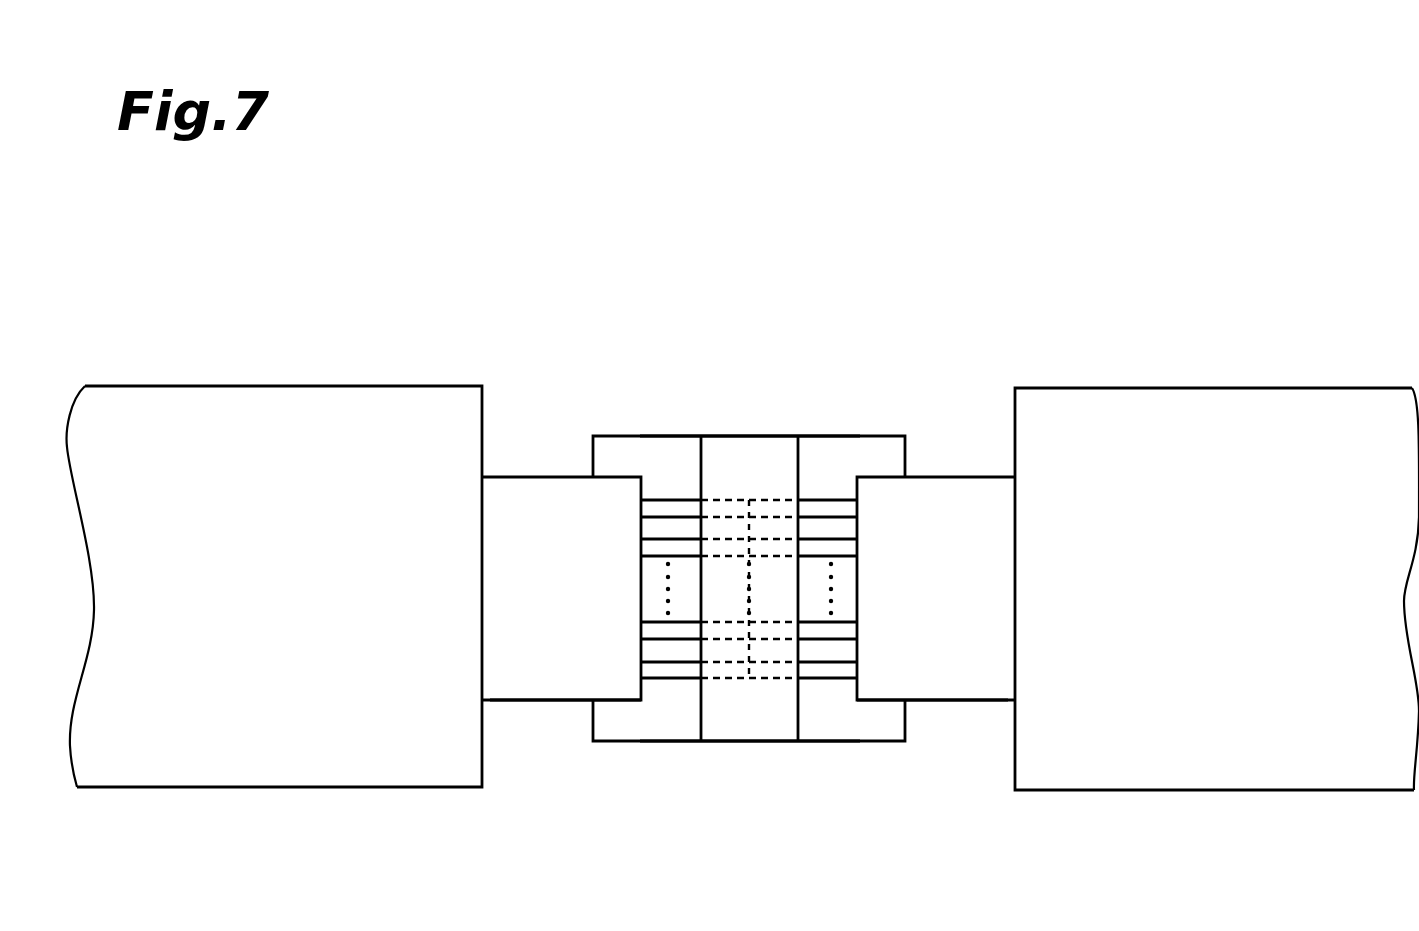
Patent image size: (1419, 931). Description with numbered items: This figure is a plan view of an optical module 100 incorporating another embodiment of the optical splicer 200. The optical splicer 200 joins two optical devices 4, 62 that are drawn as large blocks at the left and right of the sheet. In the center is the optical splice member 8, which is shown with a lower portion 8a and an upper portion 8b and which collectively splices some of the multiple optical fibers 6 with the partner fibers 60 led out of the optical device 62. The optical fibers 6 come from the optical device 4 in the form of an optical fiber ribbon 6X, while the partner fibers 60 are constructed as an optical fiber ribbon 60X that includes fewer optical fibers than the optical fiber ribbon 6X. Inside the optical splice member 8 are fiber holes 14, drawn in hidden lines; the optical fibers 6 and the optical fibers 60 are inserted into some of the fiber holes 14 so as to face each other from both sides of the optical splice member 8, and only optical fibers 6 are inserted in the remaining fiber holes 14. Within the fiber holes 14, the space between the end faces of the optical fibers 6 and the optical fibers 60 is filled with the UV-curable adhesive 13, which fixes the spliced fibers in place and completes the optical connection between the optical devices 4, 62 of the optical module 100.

The optical device 4 is at (294, 407).
The optical fiber 6 is at (672, 672).
The optical fiber ribbon 6X is at (525, 678).
The optical splice member 8 is at (759, 600).
The first relay part 8a is at (845, 720).
The second relay part 8b is at (745, 437).
The UV-curable adhesive 13 is at (777, 499).
The fiber hole 14 is at (753, 680).
The partner fiber 60 is at (898, 436).
The optical fiber ribbon 60X is at (965, 678).
The optical device 62 is at (1213, 410).
The optical module 100 is at (1084, 269).
The optical splicer 200 is at (720, 333).